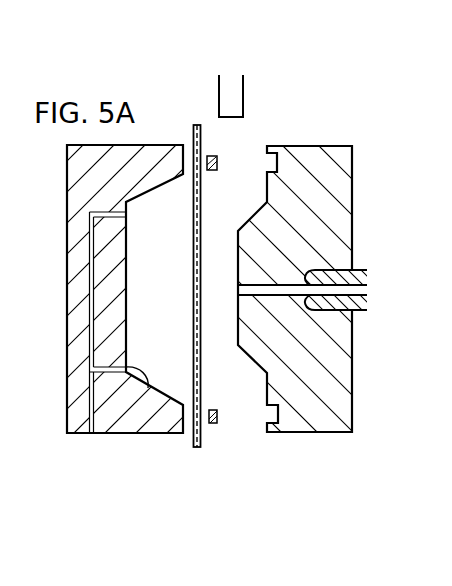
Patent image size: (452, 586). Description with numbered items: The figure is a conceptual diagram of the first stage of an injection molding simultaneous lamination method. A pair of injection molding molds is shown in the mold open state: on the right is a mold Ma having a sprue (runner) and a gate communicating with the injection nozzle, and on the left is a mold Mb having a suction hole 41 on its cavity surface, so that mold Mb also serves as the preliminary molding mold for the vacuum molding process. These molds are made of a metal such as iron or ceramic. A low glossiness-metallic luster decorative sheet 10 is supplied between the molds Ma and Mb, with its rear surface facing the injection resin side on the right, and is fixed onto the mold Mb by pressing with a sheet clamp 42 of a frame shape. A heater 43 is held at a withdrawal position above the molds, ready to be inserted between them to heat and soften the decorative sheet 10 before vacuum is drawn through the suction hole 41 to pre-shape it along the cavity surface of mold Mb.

The low glossiness-metallic luster decorative sheet 10 is at (201, 441).
The suction hole 41 is at (142, 395).
The sheet clamp 42 is at (217, 156).
The heater 43 is at (219, 84).
The mold Ma is at (327, 415).
The mold Mb is at (162, 428).